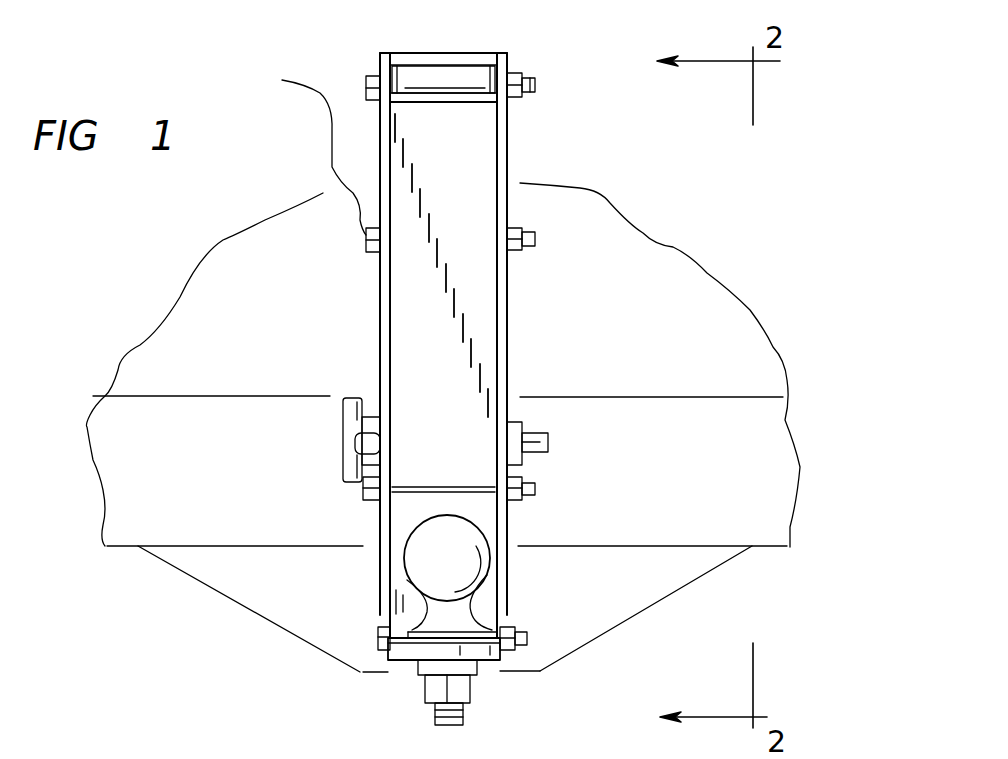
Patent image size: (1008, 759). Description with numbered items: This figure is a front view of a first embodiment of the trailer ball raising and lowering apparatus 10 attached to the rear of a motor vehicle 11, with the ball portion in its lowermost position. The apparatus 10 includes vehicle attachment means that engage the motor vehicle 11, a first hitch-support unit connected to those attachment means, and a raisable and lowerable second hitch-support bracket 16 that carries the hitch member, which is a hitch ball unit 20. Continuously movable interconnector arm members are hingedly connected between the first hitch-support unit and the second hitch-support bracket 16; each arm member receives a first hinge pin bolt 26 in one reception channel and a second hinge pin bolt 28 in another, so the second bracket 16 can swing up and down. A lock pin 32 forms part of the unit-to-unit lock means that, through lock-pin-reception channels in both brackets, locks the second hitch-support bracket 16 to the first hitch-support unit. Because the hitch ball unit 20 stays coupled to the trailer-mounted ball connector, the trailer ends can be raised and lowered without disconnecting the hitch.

The trailer ball raising and lowering apparatus 10 is at (650, 227).
The motor vehicle 11 is at (707, 338).
The raisable and lowerable second hitch-support bracket 16 is at (413, 313).
The hitch ball unit 20 is at (490, 575).
The first hinge pin bolt 26 is at (367, 92).
The second hinge pin bolt 28 is at (363, 500).
The lock pin 32 is at (538, 453).